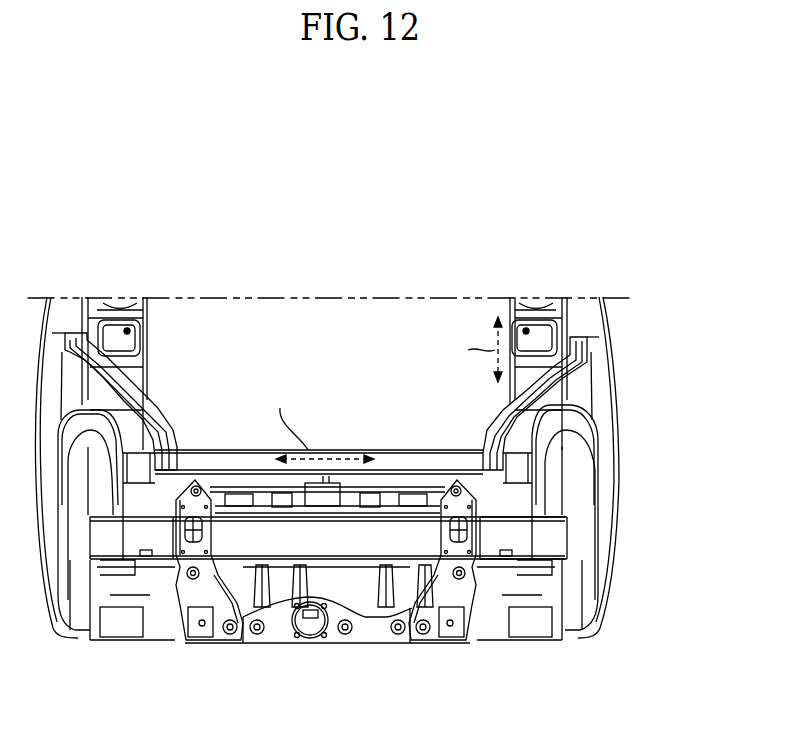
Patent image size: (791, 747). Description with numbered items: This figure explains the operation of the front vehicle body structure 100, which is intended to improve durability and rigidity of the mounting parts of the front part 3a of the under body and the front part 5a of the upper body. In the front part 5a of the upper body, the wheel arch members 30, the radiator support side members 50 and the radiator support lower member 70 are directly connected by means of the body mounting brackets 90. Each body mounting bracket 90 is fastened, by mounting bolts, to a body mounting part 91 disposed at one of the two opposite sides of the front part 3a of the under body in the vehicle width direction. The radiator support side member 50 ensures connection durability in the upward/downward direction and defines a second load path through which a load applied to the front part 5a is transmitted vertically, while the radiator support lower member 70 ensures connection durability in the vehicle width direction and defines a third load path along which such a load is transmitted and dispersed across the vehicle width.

The front vehicle body structure 100 is at (352, 227).
The front part of the upper body 5a is at (612, 351).
The radiator support side member 50 is at (560, 386).
The wheel arch member 30 is at (592, 426).
The body mounting bracket 90 is at (530, 470).
The body mounting part 91 is at (520, 540).
The radiator support lower member 70 is at (342, 449).
The front part of the under body 3a is at (211, 644).